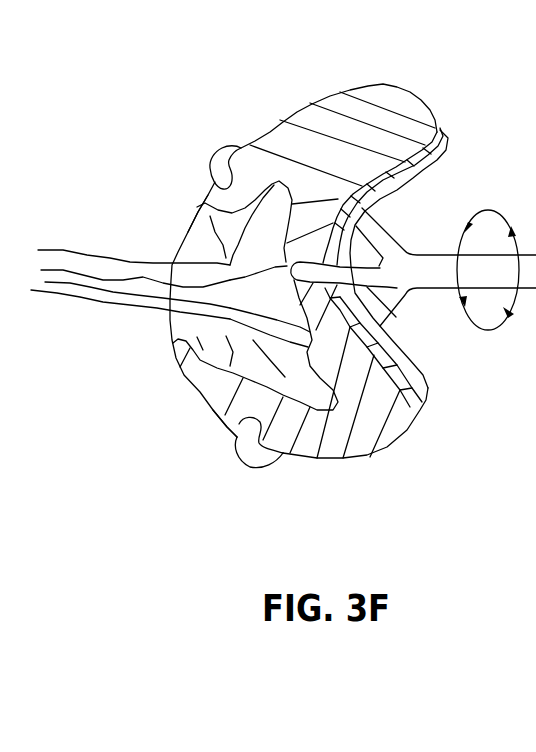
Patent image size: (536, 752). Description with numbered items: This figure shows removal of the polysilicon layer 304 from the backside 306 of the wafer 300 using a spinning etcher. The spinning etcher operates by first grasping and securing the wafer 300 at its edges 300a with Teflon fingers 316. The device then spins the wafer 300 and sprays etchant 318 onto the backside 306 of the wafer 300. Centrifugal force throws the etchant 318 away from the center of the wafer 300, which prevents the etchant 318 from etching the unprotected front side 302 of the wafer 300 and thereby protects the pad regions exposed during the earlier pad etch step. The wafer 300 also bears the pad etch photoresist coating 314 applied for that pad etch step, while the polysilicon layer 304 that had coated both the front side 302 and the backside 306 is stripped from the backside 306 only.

The wafer 300 is at (447, 137).
The edges 300a is at (200, 197).
The front side 302 is at (477, 116).
The polysilicon layer 304 is at (402, 100).
The backside 306 is at (249, 106).
The pad etch photoresist coating 314 is at (447, 162).
The Teflon fingers 316 is at (213, 163).
The etchant 318 is at (100, 263).